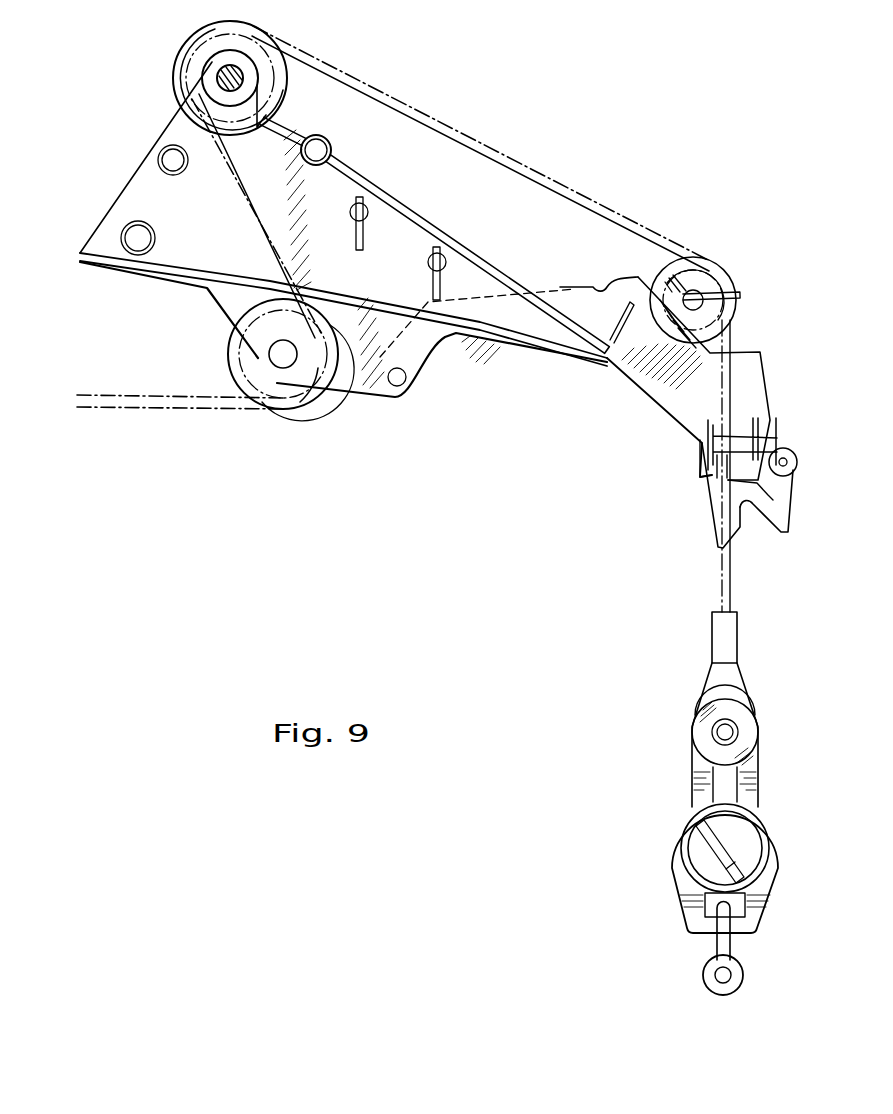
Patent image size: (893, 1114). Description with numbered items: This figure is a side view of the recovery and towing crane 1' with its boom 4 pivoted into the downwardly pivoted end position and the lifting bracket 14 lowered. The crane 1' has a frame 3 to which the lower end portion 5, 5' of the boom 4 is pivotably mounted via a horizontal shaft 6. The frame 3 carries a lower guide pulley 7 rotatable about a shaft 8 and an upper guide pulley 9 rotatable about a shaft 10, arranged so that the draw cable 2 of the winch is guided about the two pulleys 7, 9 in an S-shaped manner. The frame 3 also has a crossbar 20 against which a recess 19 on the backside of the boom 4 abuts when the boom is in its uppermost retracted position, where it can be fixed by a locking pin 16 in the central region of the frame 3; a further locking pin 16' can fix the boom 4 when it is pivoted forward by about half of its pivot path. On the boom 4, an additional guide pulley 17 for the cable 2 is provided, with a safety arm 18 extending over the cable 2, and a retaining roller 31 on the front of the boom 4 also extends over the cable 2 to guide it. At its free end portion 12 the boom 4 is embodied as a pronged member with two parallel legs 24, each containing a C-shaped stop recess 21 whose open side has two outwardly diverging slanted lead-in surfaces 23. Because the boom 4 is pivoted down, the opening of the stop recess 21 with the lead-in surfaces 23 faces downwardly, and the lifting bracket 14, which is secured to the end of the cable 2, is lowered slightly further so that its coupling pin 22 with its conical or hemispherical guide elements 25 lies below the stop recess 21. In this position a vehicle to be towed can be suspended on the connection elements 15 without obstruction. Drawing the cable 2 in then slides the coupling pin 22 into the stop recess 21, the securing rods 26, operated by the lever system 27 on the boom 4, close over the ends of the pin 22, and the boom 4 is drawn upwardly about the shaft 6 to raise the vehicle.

The crane 1' is at (604, 145).
The draw cable 2 is at (470, 160).
The frame 3 is at (152, 180).
The boom 4 is at (662, 398).
The lower end portion 5 is at (343, 352).
The bracket edge (hidden) 5' is at (471, 363).
The shaft 6 is at (402, 382).
The lower guide pulley 7 is at (318, 390).
The shaft 8 is at (270, 358).
The upper guide pulley 9 is at (258, 44).
The shaft 10 is at (242, 80).
The free end portion 12 is at (762, 388).
The lifting bracket 14 is at (680, 878).
The connection elements 15 is at (710, 984).
The pin 16 is at (341, 224).
The further locking pin 16' is at (419, 273).
The guide pulley 17 is at (698, 270).
The safety arm 18 is at (742, 295).
The recess 19 is at (604, 288).
The crossbar 20 is at (318, 150).
The C-shaped stop recess 21 is at (748, 512).
The coupling pin 22 is at (716, 732).
The lead-in surfaces 23 is at (733, 540).
The legs 24 is at (714, 518).
The guide elements 25 is at (704, 748).
The securing rods 26 is at (720, 475).
The lever system 27 is at (789, 433).
The retaining roller 31 is at (788, 474).